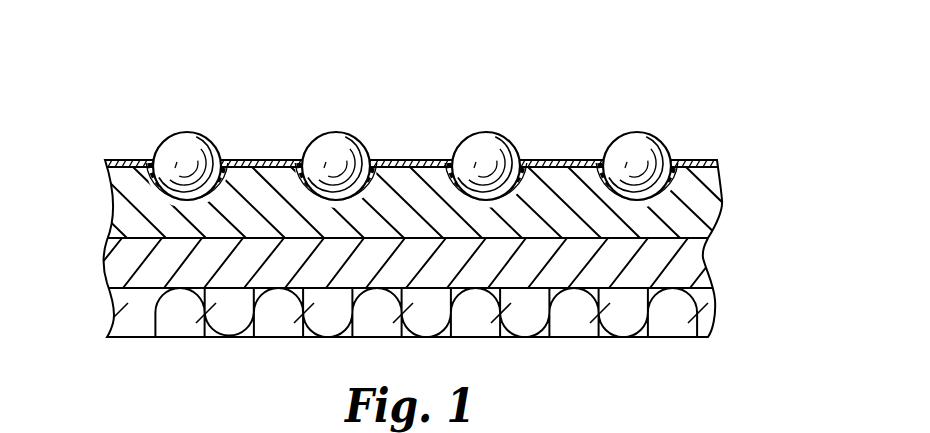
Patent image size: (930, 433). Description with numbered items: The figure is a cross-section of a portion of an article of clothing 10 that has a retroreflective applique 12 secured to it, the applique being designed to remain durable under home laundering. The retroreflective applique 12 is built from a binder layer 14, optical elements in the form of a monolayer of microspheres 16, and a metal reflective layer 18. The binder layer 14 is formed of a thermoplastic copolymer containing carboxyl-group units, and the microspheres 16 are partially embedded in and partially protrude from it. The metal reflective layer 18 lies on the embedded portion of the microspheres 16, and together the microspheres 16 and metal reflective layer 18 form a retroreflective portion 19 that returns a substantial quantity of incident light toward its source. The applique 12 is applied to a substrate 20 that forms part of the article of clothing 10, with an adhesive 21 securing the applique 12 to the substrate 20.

The article of clothing 10 is at (505, 58).
The retroreflective applique 12 is at (98, 138).
The binder layer 14 is at (133, 180).
The microspheres 16 is at (305, 152).
The metal reflective layer 18 is at (406, 164).
The retroreflective portion 19 is at (733, 127).
The substrate 20 is at (672, 328).
The adhesive 21 is at (693, 256).